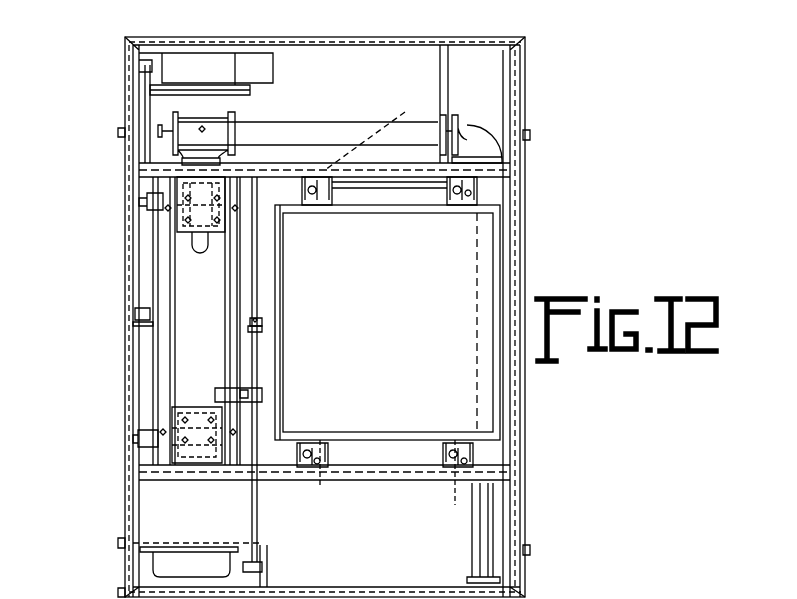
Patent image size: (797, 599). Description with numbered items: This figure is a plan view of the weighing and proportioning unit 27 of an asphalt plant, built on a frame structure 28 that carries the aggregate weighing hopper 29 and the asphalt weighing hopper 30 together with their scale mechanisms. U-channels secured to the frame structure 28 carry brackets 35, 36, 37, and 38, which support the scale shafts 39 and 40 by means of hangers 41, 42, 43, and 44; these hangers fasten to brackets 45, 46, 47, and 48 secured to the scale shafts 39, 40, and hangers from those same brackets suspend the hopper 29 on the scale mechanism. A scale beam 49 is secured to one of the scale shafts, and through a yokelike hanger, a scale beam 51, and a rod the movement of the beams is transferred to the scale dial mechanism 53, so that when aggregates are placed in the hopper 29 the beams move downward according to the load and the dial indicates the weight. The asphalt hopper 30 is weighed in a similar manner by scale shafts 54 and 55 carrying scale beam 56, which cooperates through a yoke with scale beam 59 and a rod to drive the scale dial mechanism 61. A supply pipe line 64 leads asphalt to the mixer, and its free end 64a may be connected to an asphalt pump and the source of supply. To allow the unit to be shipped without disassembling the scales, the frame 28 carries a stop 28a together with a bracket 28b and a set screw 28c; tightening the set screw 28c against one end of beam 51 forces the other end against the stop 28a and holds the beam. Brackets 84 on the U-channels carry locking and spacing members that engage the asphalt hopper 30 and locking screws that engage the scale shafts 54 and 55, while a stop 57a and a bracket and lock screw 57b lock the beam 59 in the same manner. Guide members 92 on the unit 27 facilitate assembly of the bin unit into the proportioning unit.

The weighing and proportioning unit 27 is at (518, 262).
The frame structure 28 is at (512, 462).
The stop 28a is at (262, 568).
The bracket 28b is at (262, 345).
The set screw 28c is at (262, 327).
The aggregate weighing hopper 29 is at (505, 395).
The asphalt weighing hopper 30 is at (163, 363).
The bracket 35 is at (447, 462).
The bracket 36 is at (328, 460).
The bracket 37 is at (447, 190).
The bracket 38 is at (332, 188).
The scale shaft 39 is at (378, 178).
The scale shaft 40 is at (393, 482).
The hanger 41 is at (453, 462).
The hanger 42 is at (320, 462).
The hanger 43 is at (462, 200).
The hanger 44 is at (345, 205).
The bracket 45 is at (322, 484).
The bracket 46 is at (454, 483).
The bracket 47 is at (452, 120).
The bracket 48 is at (365, 134).
The scale beam 49 is at (270, 295).
The scale beam 51 is at (260, 425).
The scale dial mechanism 53 is at (205, 565).
The scale shaft 54 is at (140, 440).
The scale shaft 55 is at (150, 205).
The scale beam 56 is at (140, 358).
The stop 57a is at (150, 62).
The bracket and lock screw 57b is at (133, 315).
The scale beam 59 is at (140, 283).
The scale dial mechanism 61 is at (223, 75).
The supply pipe line 64 is at (300, 128).
The free end of supply pipe line 64a is at (494, 532).
The bracket 84 is at (170, 186).
The guide member 92 is at (118, 132).